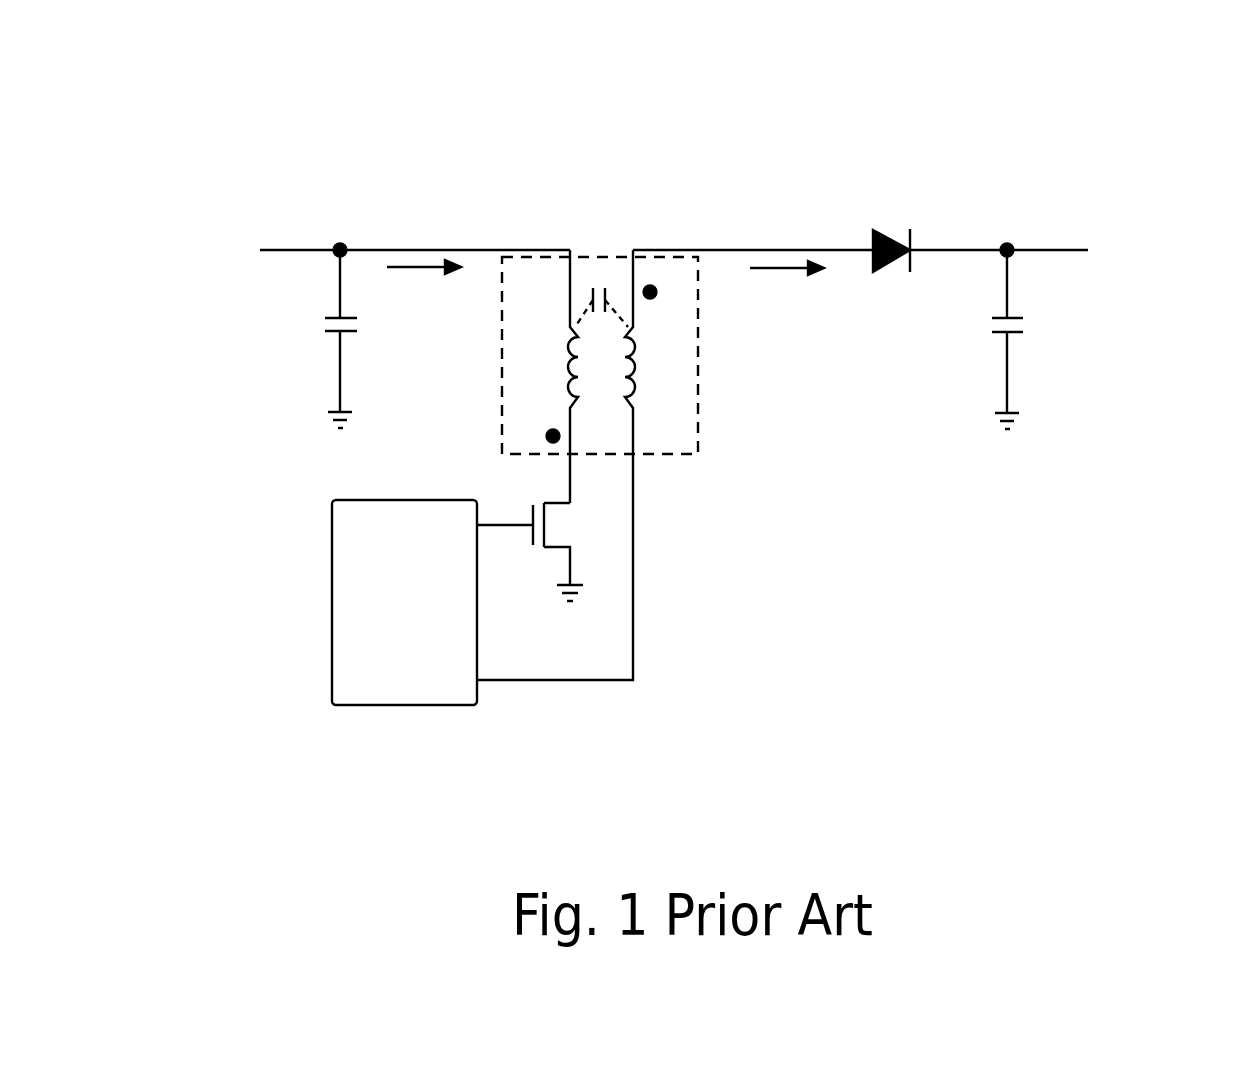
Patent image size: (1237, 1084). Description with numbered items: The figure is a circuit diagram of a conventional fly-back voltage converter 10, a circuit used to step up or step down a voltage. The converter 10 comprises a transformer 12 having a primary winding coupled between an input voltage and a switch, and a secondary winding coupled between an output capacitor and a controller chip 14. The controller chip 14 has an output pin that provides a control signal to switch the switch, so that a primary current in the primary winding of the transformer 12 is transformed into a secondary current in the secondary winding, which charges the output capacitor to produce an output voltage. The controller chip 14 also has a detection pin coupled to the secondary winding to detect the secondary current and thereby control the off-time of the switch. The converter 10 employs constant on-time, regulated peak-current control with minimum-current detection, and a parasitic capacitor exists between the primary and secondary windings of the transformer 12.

The fly-back voltage converter 10 is at (1118, 142).
The transformer 12 is at (698, 387).
The controller chip 14 is at (332, 598).